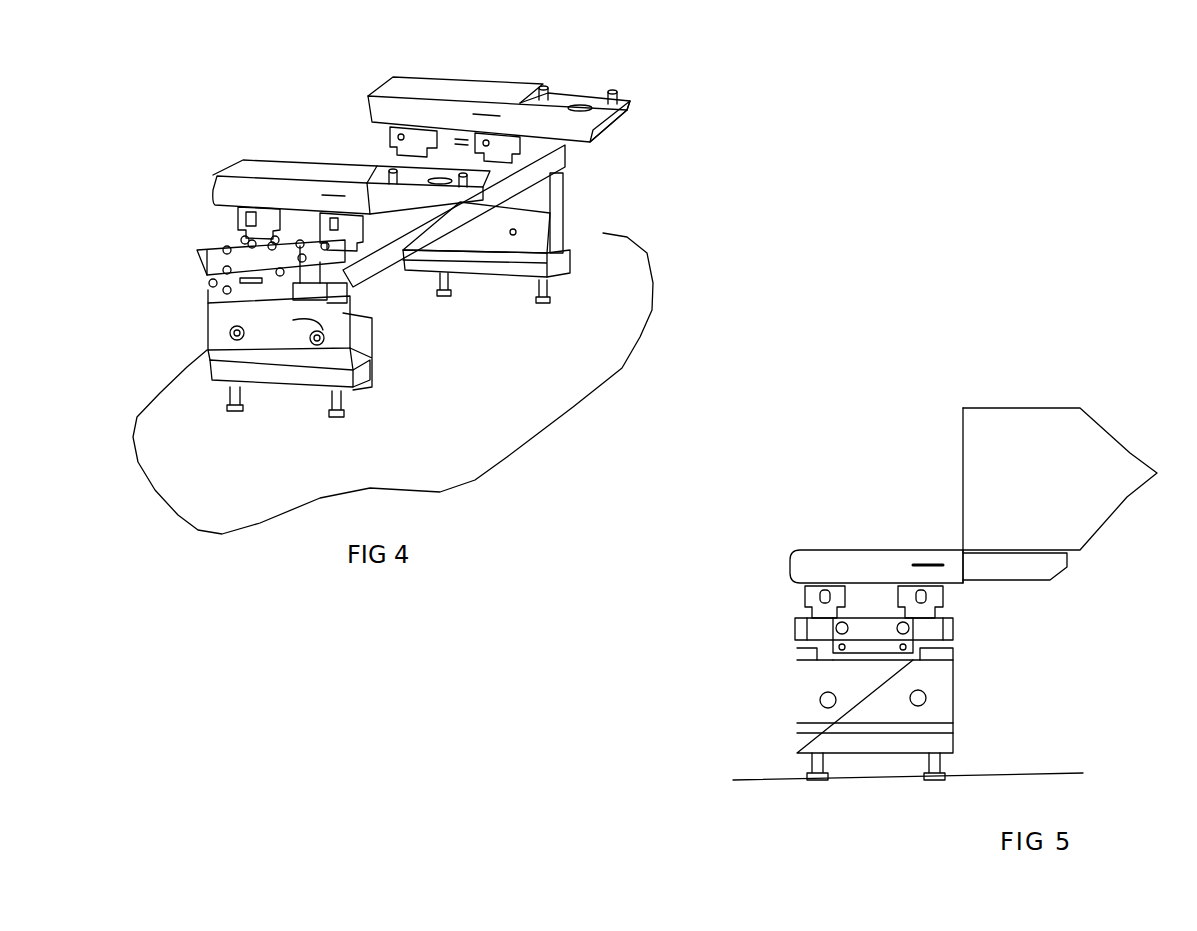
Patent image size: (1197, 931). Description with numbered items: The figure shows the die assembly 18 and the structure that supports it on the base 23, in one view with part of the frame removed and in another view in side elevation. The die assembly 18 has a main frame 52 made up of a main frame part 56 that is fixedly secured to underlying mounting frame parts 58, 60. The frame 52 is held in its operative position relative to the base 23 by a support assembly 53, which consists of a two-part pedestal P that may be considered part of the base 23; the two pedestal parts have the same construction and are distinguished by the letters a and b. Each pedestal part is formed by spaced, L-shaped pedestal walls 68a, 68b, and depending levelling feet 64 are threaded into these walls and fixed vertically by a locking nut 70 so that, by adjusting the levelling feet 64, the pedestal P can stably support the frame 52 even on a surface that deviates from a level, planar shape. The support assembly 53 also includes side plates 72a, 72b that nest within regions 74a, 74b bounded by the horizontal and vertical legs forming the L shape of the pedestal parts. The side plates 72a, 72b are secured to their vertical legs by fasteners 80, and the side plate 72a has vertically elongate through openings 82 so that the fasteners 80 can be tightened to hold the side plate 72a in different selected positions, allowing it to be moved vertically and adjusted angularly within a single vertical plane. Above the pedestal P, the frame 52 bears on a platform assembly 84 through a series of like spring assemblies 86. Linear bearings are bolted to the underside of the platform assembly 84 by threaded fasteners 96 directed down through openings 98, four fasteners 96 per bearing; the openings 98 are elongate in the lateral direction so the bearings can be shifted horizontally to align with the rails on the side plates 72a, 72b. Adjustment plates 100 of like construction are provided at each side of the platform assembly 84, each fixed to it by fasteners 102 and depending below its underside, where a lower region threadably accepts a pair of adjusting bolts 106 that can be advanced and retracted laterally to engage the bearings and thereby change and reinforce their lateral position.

In FIG. 5, the die assembly 18 is at (1109, 419).
In FIG. 4, the base 23 is at (393, 383).
In FIG. 5, the base 23 is at (1033, 773).
In FIG. 5, the main frame 52 is at (1007, 433).
In FIG. 5, the support assembly 53 is at (1012, 657).
In FIG. 5, the main frame part 56 is at (987, 447).
In FIG. 4, the mounting frame part 58 is at (452, 88).
In FIG. 4, the mounting frame part 60 is at (308, 170).
In FIG. 5, the mounting frame part 60 is at (827, 572).
In FIG. 4, the levelling feet 64 is at (345, 401).
In FIG. 5, the levelling feet 64 is at (807, 773).
In FIG. 4, the L-shaped pedestal wall 68a is at (380, 383).
In FIG. 4, the L-shaped pedestal wall 68b is at (533, 280).
In FIG. 4, the locking nut 70 is at (335, 383).
In FIG. 4, the side plate 72a is at (208, 347).
In FIG. 5, the side plate 72a is at (817, 682).
In FIG. 4, the side plate 72b is at (572, 230).
In FIG. 4, the region 74a is at (347, 342).
In FIG. 4, the region 74b is at (565, 235).
In FIG. 4, the fasteners 80 is at (311, 350).
In FIG. 5, the fasteners 80 is at (920, 697).
In FIG. 4, the through openings 82 is at (295, 327).
In FIG. 4, the platform assembly 84 is at (385, 172).
In FIG. 4, the spring assemblies 86 is at (240, 214).
In FIG. 5, the spring assemblies 86 is at (794, 599).
In FIG. 4, the threaded fasteners 96 is at (302, 250).
In FIG. 4, the openings 98 is at (335, 272).
In FIG. 4, the adjustment plate 100 is at (257, 280).
In FIG. 5, the adjustment plate 100 is at (877, 630).
In FIG. 4, the fasteners 102 is at (210, 273).
In FIG. 4, the adjusting bolts 106 is at (210, 290).
In FIG. 4, the pedestal P is at (263, 383).
In FIG. 5, the pedestal P is at (883, 753).